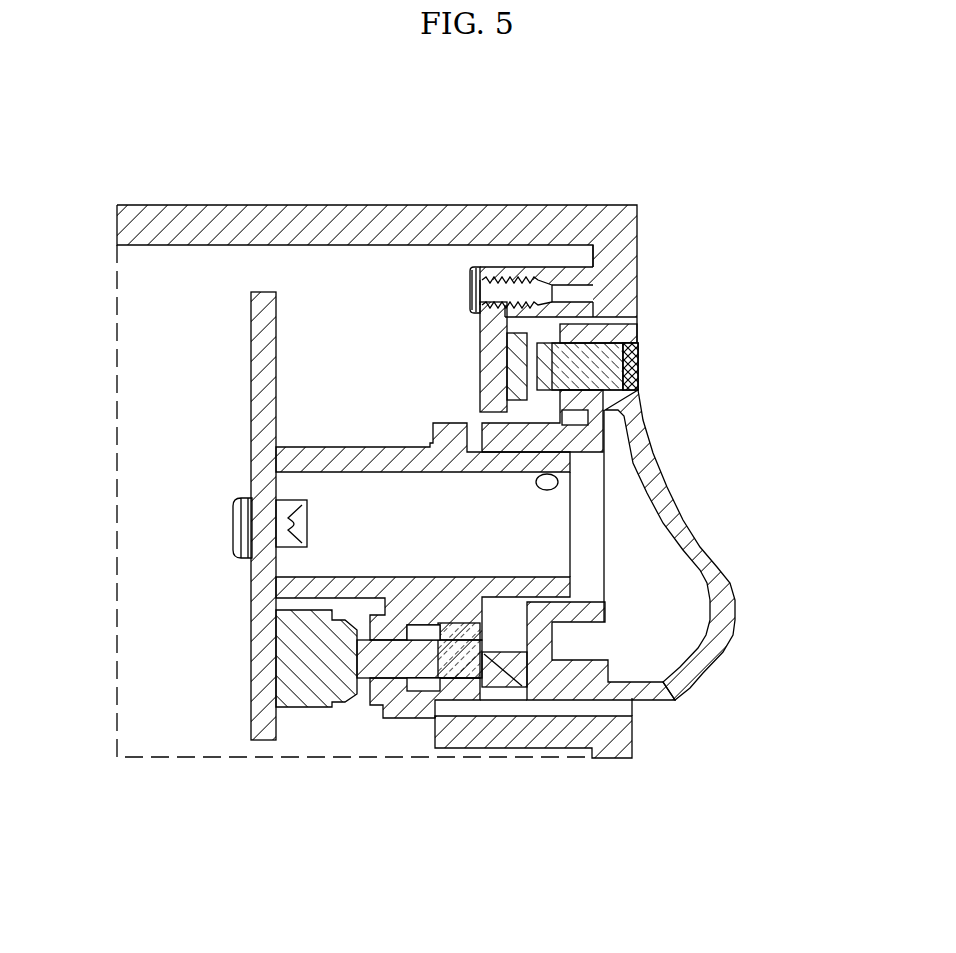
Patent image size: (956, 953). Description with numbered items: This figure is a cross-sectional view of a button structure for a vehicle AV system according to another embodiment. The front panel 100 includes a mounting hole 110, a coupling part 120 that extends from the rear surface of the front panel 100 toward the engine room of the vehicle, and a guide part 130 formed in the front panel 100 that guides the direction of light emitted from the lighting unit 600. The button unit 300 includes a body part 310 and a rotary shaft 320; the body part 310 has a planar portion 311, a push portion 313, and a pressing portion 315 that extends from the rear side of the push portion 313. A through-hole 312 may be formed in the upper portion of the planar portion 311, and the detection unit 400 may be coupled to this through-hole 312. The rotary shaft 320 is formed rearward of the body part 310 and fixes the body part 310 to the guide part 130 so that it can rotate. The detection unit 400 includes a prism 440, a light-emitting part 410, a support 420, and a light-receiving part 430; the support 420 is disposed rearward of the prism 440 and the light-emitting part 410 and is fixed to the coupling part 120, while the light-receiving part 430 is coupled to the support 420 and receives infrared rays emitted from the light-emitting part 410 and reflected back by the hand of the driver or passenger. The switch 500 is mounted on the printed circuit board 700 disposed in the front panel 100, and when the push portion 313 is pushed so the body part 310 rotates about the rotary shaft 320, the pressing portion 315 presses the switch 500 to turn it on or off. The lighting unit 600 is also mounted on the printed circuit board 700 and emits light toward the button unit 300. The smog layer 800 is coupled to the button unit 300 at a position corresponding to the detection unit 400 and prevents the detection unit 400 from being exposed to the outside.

The front panel 100 is at (262, 205).
The mounting hole 110 is at (638, 317).
The coupling part 120 is at (553, 262).
The guide part 130 is at (327, 447).
The button unit 300 is at (448, 485).
The body part 310 is at (651, 574).
The planar portion 311 is at (638, 395).
The through-hole 312 is at (638, 342).
The push portion 313 is at (734, 588).
The pressing portion 315 is at (503, 650).
The rotary shaft 320 is at (545, 482).
The detection unit 400 is at (448, 535).
The light-emitting part 410 is at (702, 353).
The support 420 is at (480, 362).
The light-receiving part 430 is at (525, 345).
The prism 440 is at (638, 380).
The switch 500 is at (302, 707).
The lighting unit 600 is at (274, 506).
The printed circuit board 700 is at (251, 378).
The smog layer 800 is at (638, 352).